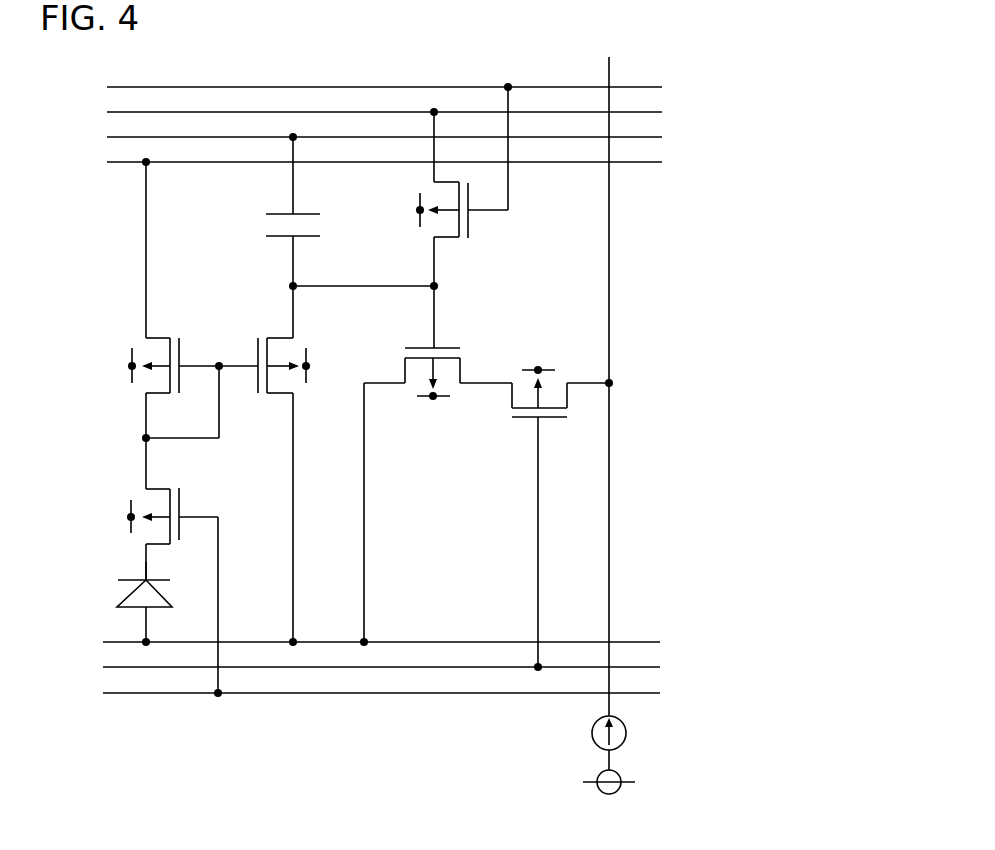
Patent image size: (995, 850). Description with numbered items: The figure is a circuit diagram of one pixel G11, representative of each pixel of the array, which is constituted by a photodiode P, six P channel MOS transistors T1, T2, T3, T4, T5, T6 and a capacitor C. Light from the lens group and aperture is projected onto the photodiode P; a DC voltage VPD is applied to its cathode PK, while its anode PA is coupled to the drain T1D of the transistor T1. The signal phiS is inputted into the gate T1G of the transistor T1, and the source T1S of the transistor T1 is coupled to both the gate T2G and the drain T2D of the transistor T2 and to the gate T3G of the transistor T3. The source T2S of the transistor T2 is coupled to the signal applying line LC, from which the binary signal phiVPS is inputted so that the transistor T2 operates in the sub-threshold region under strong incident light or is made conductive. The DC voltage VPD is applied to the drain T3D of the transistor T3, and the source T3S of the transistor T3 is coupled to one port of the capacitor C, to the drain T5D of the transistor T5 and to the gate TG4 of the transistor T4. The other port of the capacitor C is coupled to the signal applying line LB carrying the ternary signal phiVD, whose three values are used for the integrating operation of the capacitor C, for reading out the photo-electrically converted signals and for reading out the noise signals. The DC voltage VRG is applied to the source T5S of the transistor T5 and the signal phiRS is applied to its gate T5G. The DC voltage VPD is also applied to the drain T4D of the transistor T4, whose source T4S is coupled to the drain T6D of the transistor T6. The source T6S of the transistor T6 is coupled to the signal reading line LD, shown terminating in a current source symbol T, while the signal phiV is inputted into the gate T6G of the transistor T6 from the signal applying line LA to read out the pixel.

The transistor T1 is at (151, 567).
The source of transistor T1 T1S is at (160, 488).
The gate of transistor T1 T1G is at (201, 516).
The drain of transistor T1 T1D is at (160, 545).
The transistor T2 is at (167, 300).
The source of transistor T2 T2S is at (160, 337).
The gate of transistor T2 T2G is at (218, 379).
The drain of transistor T2 T2D is at (160, 395).
The transistor T3 is at (281, 466).
The source of transistor T3 T3S is at (278, 337).
The gate of transistor T3 T3G is at (237, 368).
The drain of transistor T3 T3D is at (267, 395).
The transistor T4 is at (436, 466).
The gate of transistor T4 TG4 is at (430, 320).
The source of transistor T4 T4S is at (462, 370).
The drain of transistor T4 T4D is at (385, 385).
The transistor T5 is at (448, 194).
The source of transistor T5 T5S is at (432, 173).
The gate of transistor T5 T5G is at (490, 170).
The drain of transistor T5 T5D is at (450, 240).
The transistor T6 is at (535, 497).
The source of transistor T6 T6S is at (570, 395).
The gate of transistor T6 T6G is at (527, 544).
The drain of transistor T6 T6D is at (510, 400).
The capacitor C is at (312, 214).
The photodiode P is at (137, 597).
The anode of photodiode PA is at (145, 555).
The cathode of photodiode PK is at (150, 627).
The signal applying line LA is at (648, 667).
The signal applying line LB is at (653, 139).
The signal applying line LC is at (653, 164).
The signal reading line LD is at (610, 515).
The constant current source T is at (627, 737).
The pixel G11 is at (646, 271).
The DC voltage VRG is at (363, 114).
The DC voltage VPD is at (364, 644).
The signal phiRS is at (361, 87).
The signal phiVD is at (361, 137).
The signal phiVPS is at (361, 162).
The signal phiV is at (363, 667).
The signal phiS is at (363, 693).